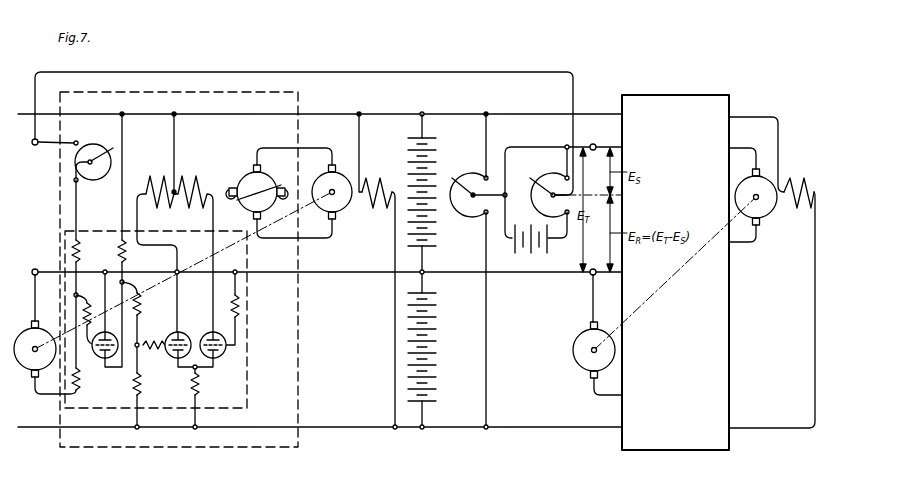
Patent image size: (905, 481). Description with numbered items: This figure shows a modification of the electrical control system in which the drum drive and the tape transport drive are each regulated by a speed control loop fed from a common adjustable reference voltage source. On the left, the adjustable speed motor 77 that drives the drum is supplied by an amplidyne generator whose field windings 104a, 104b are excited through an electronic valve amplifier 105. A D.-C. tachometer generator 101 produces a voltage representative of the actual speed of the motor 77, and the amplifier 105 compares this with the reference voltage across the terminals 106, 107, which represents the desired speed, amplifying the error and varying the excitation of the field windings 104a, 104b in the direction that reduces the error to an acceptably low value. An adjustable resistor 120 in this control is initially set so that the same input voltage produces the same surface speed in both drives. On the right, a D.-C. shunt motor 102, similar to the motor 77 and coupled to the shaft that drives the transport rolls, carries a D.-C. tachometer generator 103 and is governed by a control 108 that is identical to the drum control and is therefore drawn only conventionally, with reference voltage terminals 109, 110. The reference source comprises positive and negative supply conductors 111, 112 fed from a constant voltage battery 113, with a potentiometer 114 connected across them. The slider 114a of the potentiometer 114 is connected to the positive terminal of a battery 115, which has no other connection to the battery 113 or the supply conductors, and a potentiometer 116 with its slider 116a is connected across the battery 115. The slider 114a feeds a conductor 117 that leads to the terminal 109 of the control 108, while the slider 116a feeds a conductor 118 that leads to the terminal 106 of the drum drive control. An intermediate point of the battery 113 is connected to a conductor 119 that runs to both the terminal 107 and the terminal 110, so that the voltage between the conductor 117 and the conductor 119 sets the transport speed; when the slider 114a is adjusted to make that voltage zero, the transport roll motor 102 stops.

The adjustable speed motor 77 is at (345, 213).
The D.-C. tachometer generator 101 is at (30, 380).
The D.-C. shunt motor 102 is at (773, 217).
The D.-C. tachometer generator 103 is at (584, 362).
The amplidyne field winding 104a is at (152, 175).
The amplidyne field winding 104b is at (193, 175).
The electronic valve amplifier 105 is at (247, 325).
The terminal 106 is at (35, 146).
The terminal 107 is at (35, 268).
The control 108 is at (683, 94).
The terminal 109 is at (595, 144).
The terminal 110 is at (591, 275).
The positive supply conductor 111 is at (469, 113).
The negative supply conductor 112 is at (468, 428).
The battery 113 is at (407, 158).
The potentiometer 114 is at (464, 216).
The slider 114a is at (463, 165).
The battery 115 is at (527, 258).
The potentiometer 116 is at (531, 208).
The slider 116a is at (531, 177).
The conductor 117 is at (534, 146).
The conductor 118 is at (577, 97).
The conductor 119 is at (468, 273).
The adjustable resistor 120 is at (97, 181).